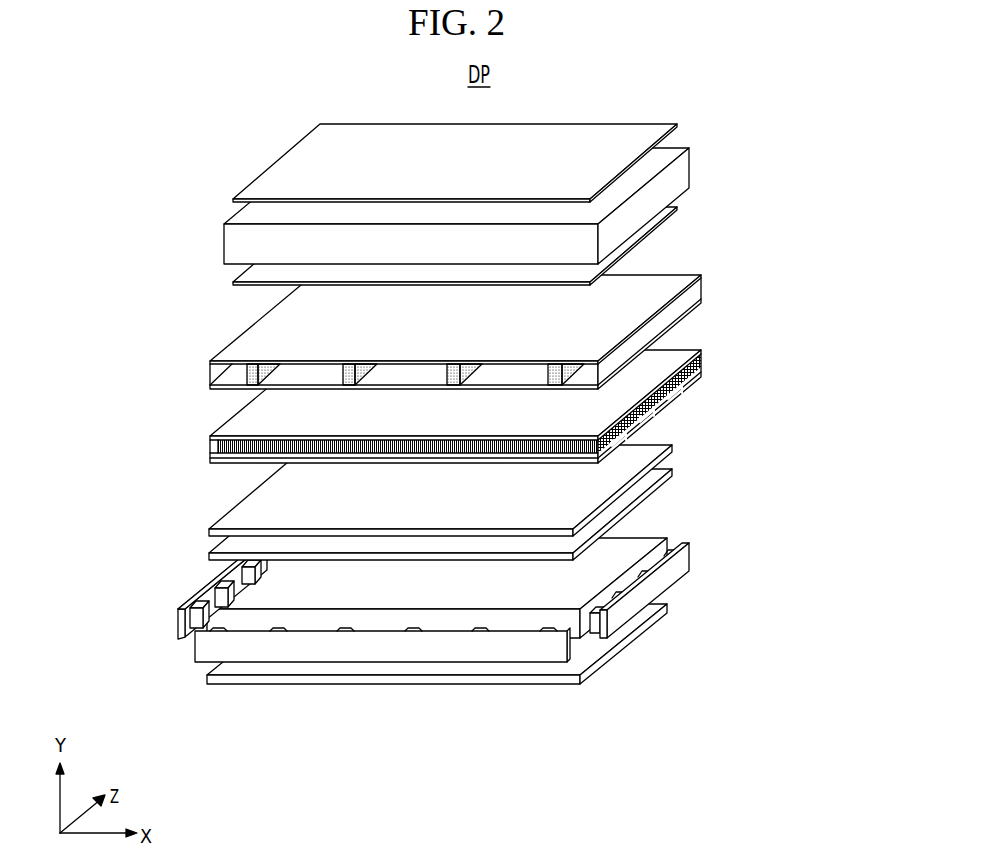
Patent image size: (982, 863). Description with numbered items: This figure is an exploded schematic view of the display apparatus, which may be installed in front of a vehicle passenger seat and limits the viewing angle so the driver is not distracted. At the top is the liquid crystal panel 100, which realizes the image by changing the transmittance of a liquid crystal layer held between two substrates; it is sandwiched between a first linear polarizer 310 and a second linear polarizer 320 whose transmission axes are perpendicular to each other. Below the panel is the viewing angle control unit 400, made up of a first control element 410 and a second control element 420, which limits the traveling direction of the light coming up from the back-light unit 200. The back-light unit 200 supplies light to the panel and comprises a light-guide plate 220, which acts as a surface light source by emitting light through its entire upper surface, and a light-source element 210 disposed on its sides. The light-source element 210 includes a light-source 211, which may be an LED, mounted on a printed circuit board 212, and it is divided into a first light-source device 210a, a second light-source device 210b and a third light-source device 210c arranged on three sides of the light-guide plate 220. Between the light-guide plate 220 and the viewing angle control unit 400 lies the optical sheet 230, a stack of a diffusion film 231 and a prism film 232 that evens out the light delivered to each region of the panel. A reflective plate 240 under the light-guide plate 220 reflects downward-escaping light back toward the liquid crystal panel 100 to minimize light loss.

The liquid crystal panel 100 is at (706, 163).
The back-light unit 200 is at (497, 619).
The light-source element 210 is at (466, 672).
The first light-source device 210a is at (382, 690).
The second light-source device 210b is at (592, 650).
The third light-source device 210c is at (196, 647).
The light-source 211 is at (198, 620).
The printed circuit board 212 is at (193, 598).
The light-guide plate 220 is at (666, 529).
The optical sheet 230 is at (508, 498).
The diffusion film 231 is at (675, 472).
The prism film 232 is at (675, 444).
The reflective plate 240 is at (683, 608).
The first linear polarizer 310 is at (214, 285).
The second linear polarizer 320 is at (214, 198).
The viewing angle control unit 400 is at (530, 369).
The first control element 410 is at (721, 362).
The second control element 420 is at (797, 367).